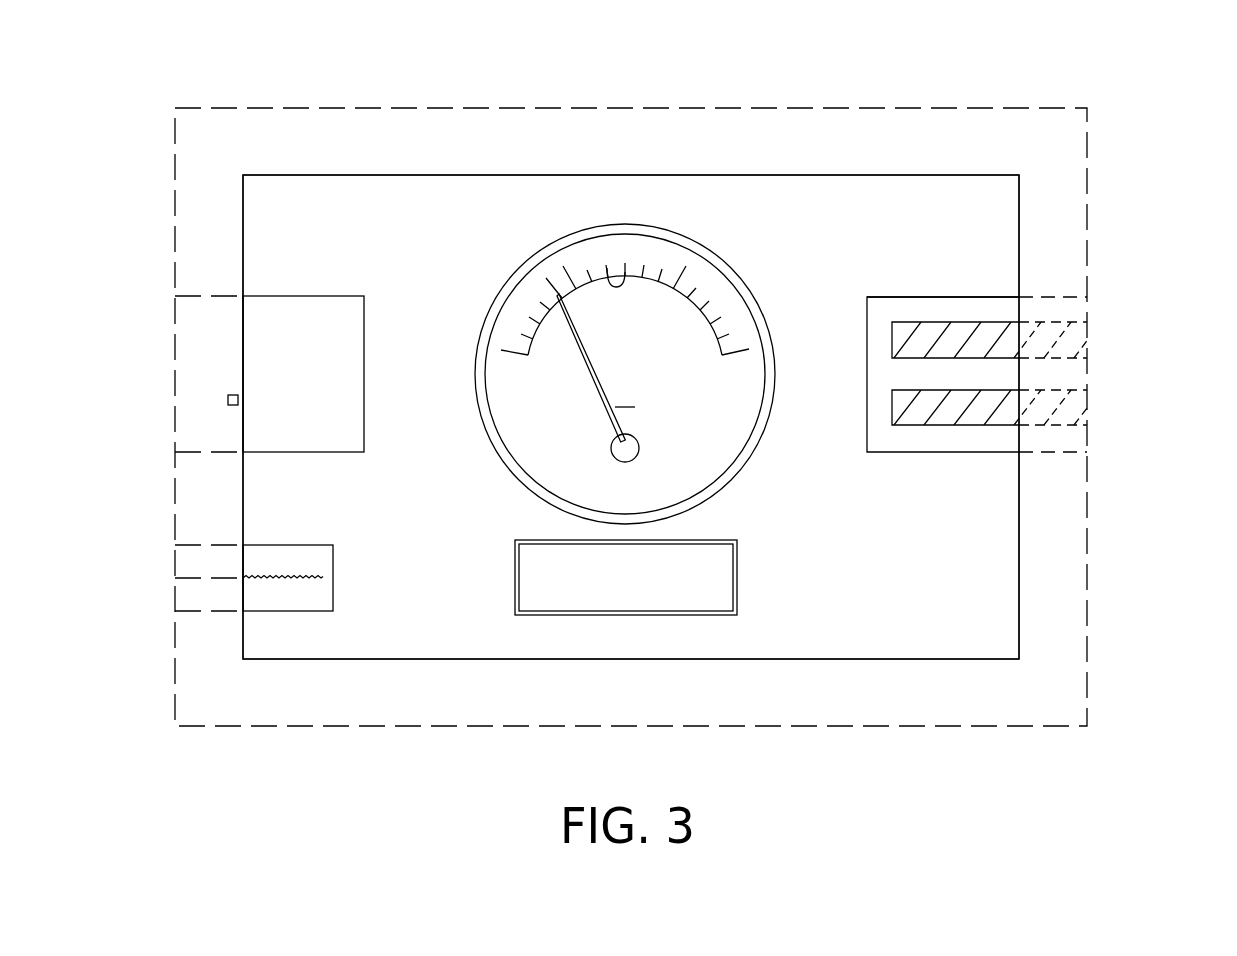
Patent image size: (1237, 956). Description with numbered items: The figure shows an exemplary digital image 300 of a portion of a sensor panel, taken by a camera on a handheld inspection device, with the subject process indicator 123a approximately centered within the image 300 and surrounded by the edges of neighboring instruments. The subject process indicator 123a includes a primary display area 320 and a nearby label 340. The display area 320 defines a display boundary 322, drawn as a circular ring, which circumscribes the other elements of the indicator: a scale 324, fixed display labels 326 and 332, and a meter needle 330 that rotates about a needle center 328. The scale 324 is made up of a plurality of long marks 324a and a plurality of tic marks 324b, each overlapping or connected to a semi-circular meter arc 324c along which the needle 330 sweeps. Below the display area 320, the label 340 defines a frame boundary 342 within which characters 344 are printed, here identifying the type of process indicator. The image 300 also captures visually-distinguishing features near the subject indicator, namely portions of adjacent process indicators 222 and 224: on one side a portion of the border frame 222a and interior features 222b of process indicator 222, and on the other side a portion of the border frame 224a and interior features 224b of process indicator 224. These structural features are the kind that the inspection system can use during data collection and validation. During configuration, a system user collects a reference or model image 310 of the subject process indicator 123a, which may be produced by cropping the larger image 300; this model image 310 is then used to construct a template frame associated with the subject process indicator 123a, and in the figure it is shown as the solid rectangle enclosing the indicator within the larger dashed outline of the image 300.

The digital image 300 is at (1054, 106).
The model image 310 is at (1019, 190).
The subject process indicator 123a is at (773, 478).
The primary display area 320 is at (747, 270).
The display boundary 322 is at (762, 318).
The scale 324 is at (577, 238).
The long marks 324a is at (735, 347).
The tic marks 324b is at (636, 258).
The semi-circular meter arc 324c is at (607, 268).
The fixed display label 326 is at (660, 463).
The needle center 328 is at (636, 435).
The meter needle 330 is at (585, 362).
The fixed display label 332 is at (640, 392).
The label 340 is at (745, 603).
The frame boundary 342 is at (735, 560).
The characters 344 is at (548, 587).
The adjacent process indicator 224 is at (330, 472).
The border frame portion 224a is at (287, 296).
The interior feature 224b is at (295, 337).
The adjacent process indicator 222 is at (944, 462).
The border frame portion 222a is at (960, 297).
The interior feature 222b is at (977, 361).